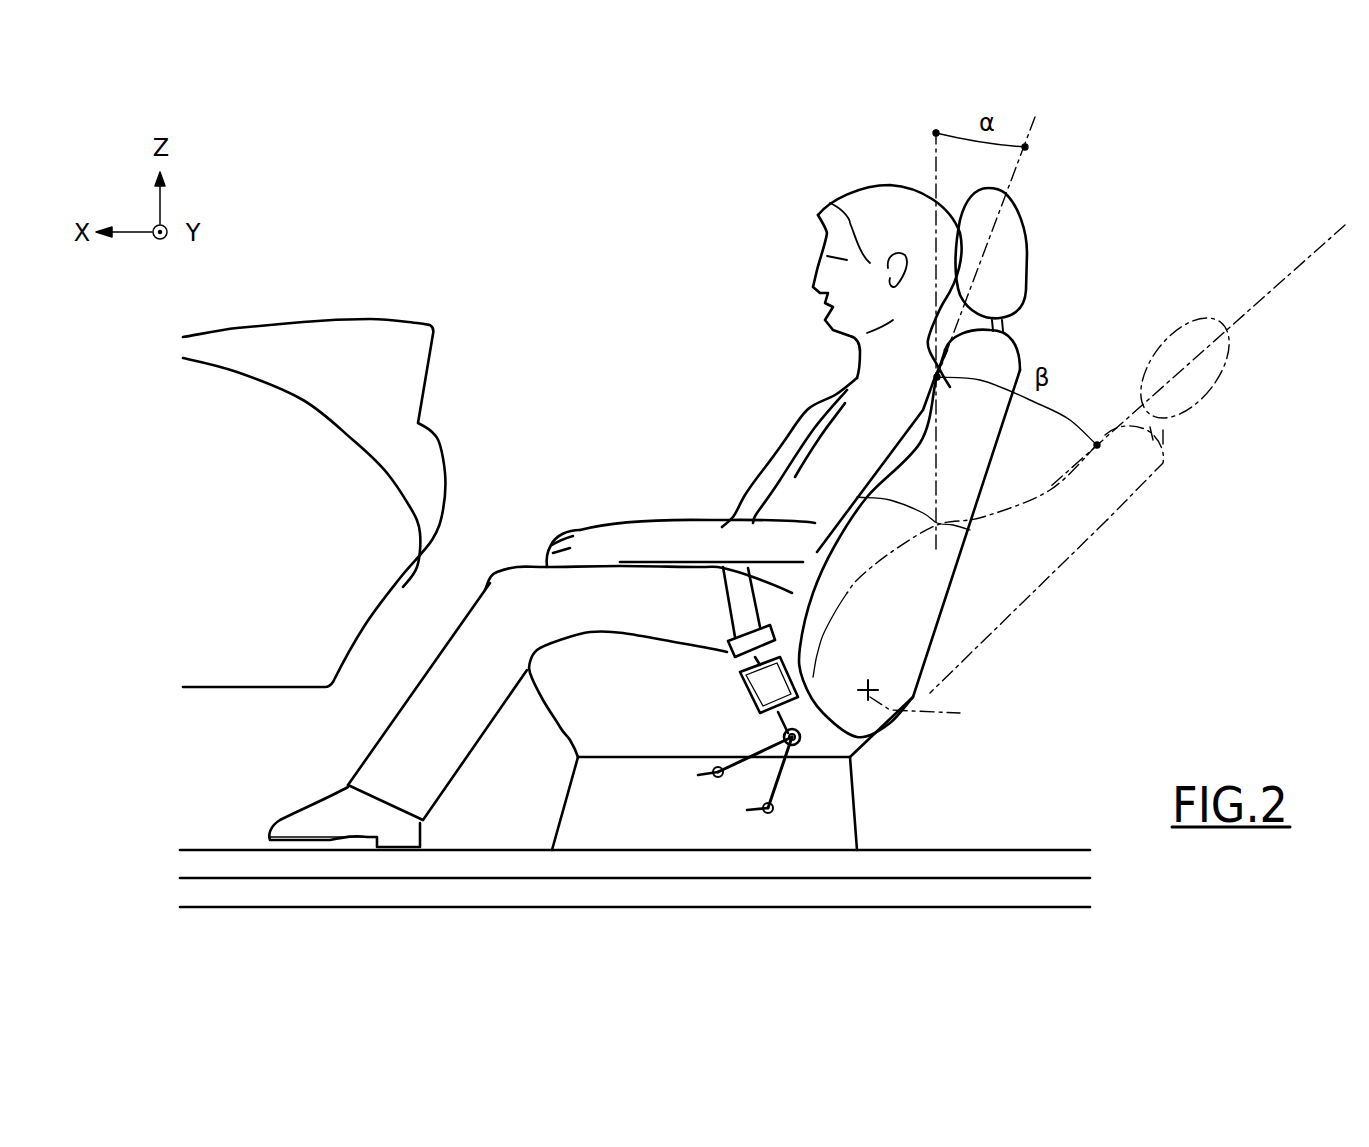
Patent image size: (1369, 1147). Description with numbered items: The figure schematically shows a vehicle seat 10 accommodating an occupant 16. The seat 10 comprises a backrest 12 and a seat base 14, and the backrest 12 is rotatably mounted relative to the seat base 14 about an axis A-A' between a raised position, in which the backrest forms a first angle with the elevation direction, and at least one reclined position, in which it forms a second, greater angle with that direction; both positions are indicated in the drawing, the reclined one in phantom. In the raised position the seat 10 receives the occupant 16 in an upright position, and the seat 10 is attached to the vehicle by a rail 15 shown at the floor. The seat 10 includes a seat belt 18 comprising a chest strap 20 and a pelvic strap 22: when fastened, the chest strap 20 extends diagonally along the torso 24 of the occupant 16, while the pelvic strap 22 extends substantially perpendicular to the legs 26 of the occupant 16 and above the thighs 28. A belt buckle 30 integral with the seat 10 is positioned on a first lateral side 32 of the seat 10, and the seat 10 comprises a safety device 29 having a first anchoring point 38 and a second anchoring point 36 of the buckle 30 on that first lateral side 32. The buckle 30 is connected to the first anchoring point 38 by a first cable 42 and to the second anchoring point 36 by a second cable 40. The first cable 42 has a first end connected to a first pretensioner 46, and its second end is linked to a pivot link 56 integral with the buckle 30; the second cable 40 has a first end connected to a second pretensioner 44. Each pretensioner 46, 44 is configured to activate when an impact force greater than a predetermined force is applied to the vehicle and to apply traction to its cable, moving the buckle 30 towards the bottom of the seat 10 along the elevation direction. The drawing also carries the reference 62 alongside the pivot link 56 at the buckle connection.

The seat 10 is at (1002, 250).
The backrest 12 is at (973, 445).
The seat base 14 is at (652, 740).
The rail 15 is at (820, 850).
The occupant 16 is at (900, 203).
The seat belt 18 is at (737, 600).
The chest strap 20 is at (810, 407).
The pelvic strap 22 is at (763, 573).
The torso 24 is at (970, 530).
The legs 26 is at (542, 665).
The thighs 28 is at (542, 593).
The safety device 29 is at (793, 688).
The belt buckle 30 is at (760, 678).
The first lateral side 32 is at (550, 690).
The second anchoring point 36 is at (729, 772).
The first anchoring point 38 is at (777, 820).
The second cable 40 is at (843, 733).
The first cable 42 is at (780, 842).
The second pretensioner 44 is at (718, 772).
The first pretensioner 46 is at (747, 820).
The pivot link 56 is at (879, 748).
The bearing 62 is at (797, 737).